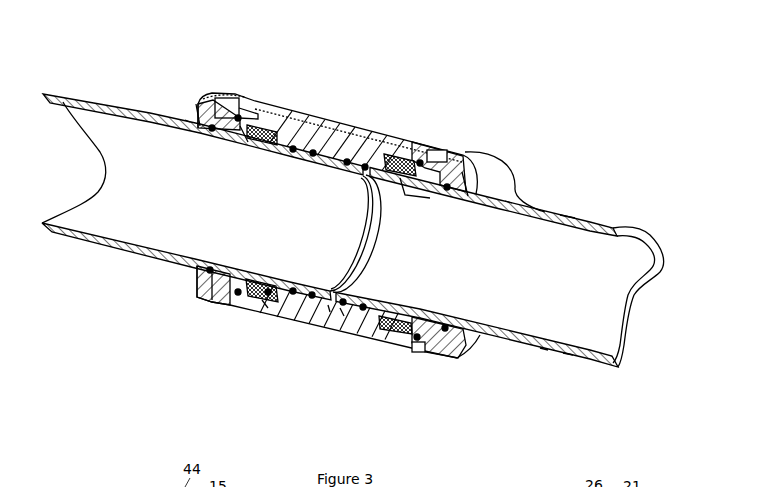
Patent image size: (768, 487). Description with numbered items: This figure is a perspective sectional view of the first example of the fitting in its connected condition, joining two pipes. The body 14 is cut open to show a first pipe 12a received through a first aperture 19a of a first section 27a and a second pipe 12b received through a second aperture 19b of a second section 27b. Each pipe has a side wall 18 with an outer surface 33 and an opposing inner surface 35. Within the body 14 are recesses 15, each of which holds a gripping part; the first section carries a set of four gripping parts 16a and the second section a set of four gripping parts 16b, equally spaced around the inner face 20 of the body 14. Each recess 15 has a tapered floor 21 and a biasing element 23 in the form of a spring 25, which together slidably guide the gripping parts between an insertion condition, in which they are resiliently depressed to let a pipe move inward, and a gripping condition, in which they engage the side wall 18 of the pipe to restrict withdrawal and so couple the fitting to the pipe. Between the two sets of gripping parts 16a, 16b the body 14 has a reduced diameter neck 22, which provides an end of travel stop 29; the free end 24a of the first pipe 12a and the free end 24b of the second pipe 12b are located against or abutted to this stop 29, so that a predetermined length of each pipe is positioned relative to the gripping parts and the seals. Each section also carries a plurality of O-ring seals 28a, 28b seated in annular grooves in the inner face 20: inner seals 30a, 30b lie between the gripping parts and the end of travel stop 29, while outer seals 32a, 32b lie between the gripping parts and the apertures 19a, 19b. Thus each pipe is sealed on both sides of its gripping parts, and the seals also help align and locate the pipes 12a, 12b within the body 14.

The first pipe 12a is at (63, 93).
The second pipe 12b is at (600, 218).
The body 14 is at (371, 115).
The recess 15 is at (250, 128).
The gripping parts 16a is at (252, 139).
The gripping parts 16b is at (410, 197).
The side wall 18 is at (568, 210).
The first aperture 19a is at (187, 120).
The second aperture 19b is at (508, 177).
The inner face 20 is at (377, 186).
The tapered floor 21 is at (311, 282).
The neck 22 is at (318, 302).
The biasing element 23 is at (240, 310).
The free end 24a is at (357, 242).
The free end 24b is at (367, 243).
The spring 25 is at (258, 142).
The first section 27a is at (238, 110).
The second section 27b is at (417, 140).
The seals 28a is at (318, 117).
The seals 28b is at (372, 126).
The end of travel stop 29 is at (328, 305).
The inner seal 30a is at (292, 300).
The inner seal 30b is at (333, 304).
The outer seal 32a is at (200, 106).
The outer seal 32b is at (467, 198).
The outer surface 33 is at (542, 352).
The inner surface 35 is at (568, 354).